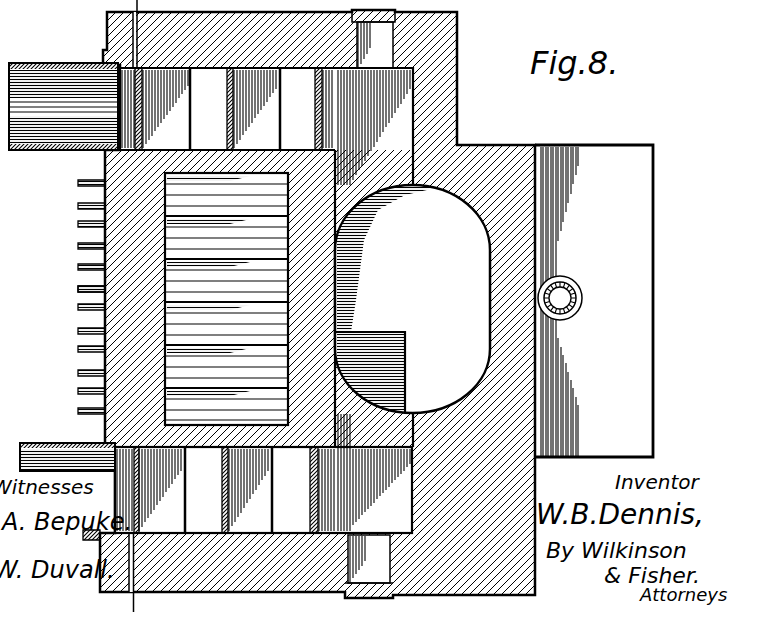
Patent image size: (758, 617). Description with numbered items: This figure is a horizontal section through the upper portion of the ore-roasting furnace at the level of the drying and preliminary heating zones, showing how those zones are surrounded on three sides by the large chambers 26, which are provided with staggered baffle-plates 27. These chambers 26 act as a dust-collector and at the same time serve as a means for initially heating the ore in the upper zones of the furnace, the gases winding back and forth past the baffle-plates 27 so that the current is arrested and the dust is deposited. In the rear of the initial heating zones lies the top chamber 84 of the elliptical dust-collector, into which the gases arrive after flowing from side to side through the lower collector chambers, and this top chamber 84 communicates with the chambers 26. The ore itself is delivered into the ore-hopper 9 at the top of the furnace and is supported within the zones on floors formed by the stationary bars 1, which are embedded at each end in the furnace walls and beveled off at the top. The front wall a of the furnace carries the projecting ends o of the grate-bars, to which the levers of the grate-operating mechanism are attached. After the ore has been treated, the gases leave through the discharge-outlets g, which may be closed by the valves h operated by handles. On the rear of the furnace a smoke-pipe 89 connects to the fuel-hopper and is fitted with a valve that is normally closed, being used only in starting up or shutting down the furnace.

The stationary bars 1 is at (165, 303).
The ore-hopper 9 is at (37, 455).
The discharge-outlets g is at (38, 76).
The valves h is at (137, 122).
The large chambers 26 is at (264, 300).
The staggered baffle-plates 27 is at (277, 124).
The top chamber 84 is at (412, 300).
The smoke-pipe 89 is at (582, 293).
The front wall a is at (79, 292).
The ends of the grate-bars o is at (78, 290).